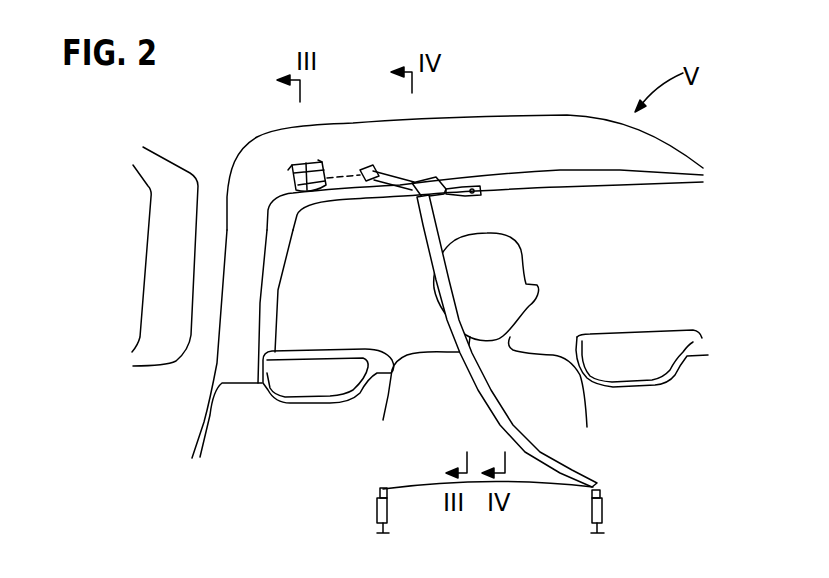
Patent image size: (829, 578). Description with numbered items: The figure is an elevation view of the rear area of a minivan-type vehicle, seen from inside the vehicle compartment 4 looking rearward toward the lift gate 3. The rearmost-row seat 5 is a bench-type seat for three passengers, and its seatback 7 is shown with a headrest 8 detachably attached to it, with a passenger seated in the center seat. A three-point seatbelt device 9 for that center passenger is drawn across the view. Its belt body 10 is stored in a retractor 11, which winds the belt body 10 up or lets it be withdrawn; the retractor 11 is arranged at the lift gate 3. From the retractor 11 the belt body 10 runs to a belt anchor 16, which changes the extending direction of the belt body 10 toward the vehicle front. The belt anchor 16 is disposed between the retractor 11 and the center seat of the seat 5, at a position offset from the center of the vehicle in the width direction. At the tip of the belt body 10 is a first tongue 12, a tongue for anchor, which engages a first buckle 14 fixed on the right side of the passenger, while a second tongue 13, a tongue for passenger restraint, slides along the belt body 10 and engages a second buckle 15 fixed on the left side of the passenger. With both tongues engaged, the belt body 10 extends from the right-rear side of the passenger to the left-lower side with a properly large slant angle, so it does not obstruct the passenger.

The lift gate 3 is at (657, 197).
The vehicle compartment 4 is at (283, 461).
The seat 5 is at (645, 317).
The seatback 7 is at (212, 412).
The headrest 8 is at (312, 350).
The seatbelt device 9 is at (413, 168).
The belt body 10 is at (422, 236).
The retractor 11 is at (314, 162).
The first tongue 12 is at (380, 491).
The second tongue 13 is at (602, 493).
The first buckle 14 is at (377, 513).
The second buckle 15 is at (602, 515).
The belt anchor 16 is at (433, 176).